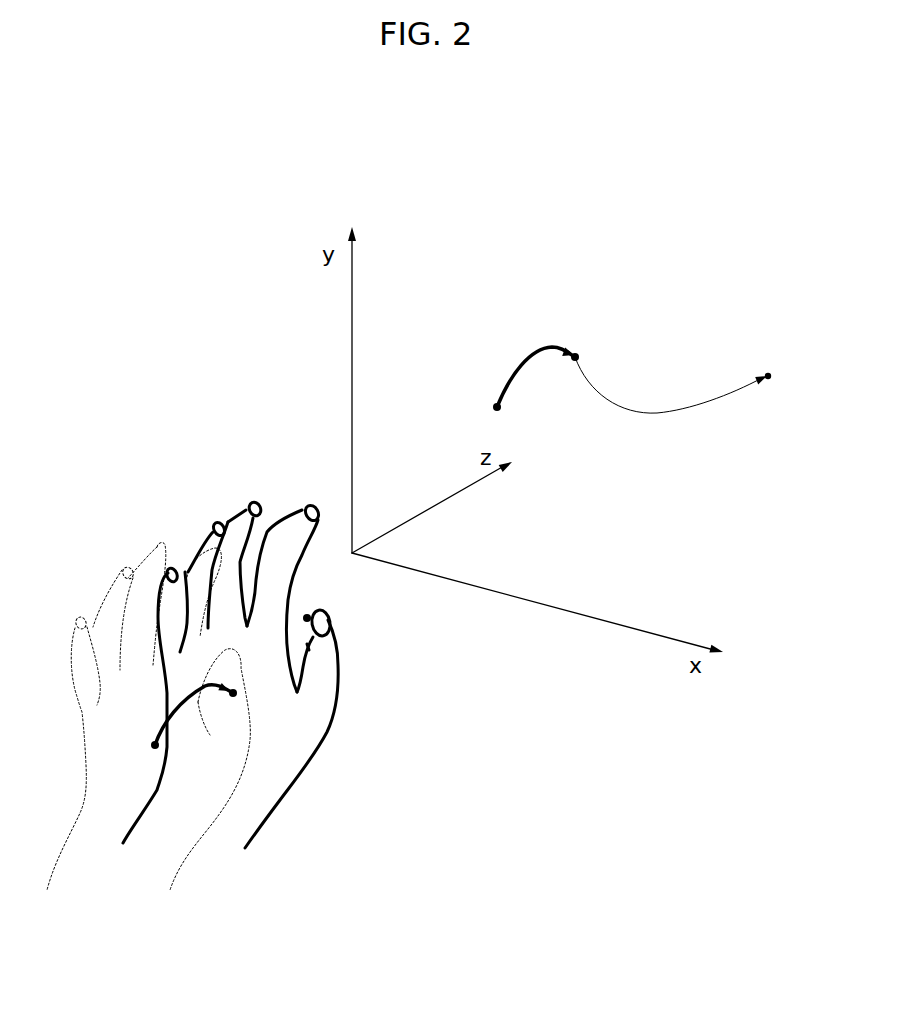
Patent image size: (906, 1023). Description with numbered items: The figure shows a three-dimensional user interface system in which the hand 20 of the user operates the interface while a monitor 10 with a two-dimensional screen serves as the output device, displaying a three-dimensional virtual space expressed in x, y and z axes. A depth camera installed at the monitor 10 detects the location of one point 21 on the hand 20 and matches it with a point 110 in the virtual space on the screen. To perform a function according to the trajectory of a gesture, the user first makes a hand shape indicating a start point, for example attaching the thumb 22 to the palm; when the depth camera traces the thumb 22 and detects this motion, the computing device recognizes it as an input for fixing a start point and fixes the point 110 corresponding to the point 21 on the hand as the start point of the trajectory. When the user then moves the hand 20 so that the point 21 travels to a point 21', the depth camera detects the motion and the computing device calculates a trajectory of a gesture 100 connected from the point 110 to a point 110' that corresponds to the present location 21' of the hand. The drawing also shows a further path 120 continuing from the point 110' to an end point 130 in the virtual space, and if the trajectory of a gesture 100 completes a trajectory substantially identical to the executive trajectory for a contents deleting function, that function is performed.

The monitor 10 is at (432, 288).
The trajectory of a gesture 100 is at (533, 340).
The point in 3-dimensional virtual space 110 is at (480, 375).
The point 110' is at (599, 330).
The second movement trajectory 120 is at (640, 411).
The end point of second trajectory 130 is at (769, 374).
The hand 20 is at (253, 504).
The point on the hand 21 is at (135, 716).
The present location of the hand 21' is at (297, 744).
The thumb 22 is at (307, 617).